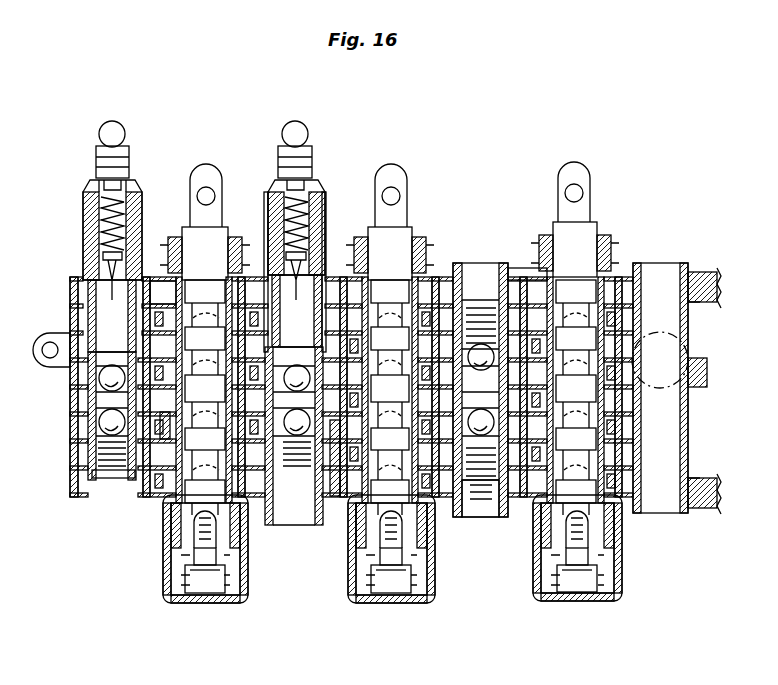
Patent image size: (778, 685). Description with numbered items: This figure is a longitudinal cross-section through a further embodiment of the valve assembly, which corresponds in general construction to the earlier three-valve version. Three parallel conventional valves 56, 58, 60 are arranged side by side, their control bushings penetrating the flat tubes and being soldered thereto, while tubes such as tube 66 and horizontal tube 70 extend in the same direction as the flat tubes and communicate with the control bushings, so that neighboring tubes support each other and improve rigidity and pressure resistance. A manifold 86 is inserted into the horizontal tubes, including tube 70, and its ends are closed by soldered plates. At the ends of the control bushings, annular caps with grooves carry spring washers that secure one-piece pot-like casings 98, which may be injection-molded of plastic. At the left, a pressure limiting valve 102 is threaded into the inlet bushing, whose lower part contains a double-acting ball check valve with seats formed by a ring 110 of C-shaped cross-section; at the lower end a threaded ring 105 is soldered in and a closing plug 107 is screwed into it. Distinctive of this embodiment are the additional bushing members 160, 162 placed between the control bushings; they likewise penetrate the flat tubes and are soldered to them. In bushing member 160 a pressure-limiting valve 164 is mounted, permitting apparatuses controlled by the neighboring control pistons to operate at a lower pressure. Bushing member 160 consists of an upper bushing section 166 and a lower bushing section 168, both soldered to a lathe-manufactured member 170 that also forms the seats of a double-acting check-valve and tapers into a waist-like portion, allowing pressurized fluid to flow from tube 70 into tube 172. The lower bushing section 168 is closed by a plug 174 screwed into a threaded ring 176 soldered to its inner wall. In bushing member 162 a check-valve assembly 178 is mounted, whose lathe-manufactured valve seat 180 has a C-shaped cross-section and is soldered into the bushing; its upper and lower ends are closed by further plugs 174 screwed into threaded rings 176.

The valve 56 is at (213, 182).
The valve 58 is at (403, 180).
The valve 60 is at (585, 182).
The tube 66 is at (162, 292).
The horizontal tube 70 is at (170, 388).
The manifold 86 is at (657, 275).
The pot-like casing 98 is at (163, 568).
The pressure limiting valve 102 is at (92, 183).
The threaded ring 105 is at (90, 477).
The closing plug 107 is at (110, 479).
The ring 110 is at (75, 448).
The bushing member 160 is at (328, 247).
The bushing member 162 is at (508, 268).
The pressure-limiting valve 164 is at (318, 182).
The upper bushing section 166 is at (263, 267).
The lower bushing section 168 is at (271, 488).
The lathe-manufactured member 170 is at (312, 505).
The tube 172 is at (340, 502).
The plug 174 is at (300, 472).
The threaded ring 176 is at (298, 515).
The check-valve assembly 178 is at (473, 478).
The valve seat 180 is at (495, 478).